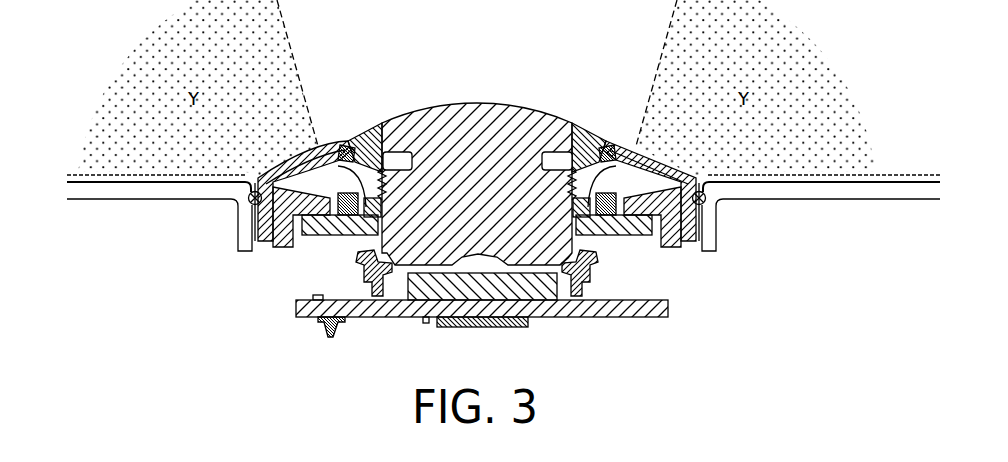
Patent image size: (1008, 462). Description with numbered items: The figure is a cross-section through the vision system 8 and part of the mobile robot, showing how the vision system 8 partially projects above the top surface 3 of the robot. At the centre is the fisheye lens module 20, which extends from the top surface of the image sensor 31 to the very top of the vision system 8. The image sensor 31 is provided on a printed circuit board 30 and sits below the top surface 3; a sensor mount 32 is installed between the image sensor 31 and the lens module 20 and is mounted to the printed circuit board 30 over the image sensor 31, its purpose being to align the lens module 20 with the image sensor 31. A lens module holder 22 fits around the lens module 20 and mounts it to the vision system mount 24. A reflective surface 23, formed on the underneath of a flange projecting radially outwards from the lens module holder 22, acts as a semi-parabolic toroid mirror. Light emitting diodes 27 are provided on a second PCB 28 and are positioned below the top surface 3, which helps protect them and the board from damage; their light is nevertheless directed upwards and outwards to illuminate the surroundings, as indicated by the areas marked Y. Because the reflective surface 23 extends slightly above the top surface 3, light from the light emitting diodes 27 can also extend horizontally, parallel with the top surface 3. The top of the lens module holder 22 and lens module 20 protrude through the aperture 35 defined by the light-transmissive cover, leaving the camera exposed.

The top surface 3 is at (124, 192).
The vision system 8 is at (384, 36).
The lens module 20 is at (472, 137).
The lens module holder 22 is at (370, 128).
The reflective surface 23 is at (633, 222).
The vision system mount 24 is at (280, 246).
The light emitting diodes 27 is at (350, 192).
The second PCB 28 is at (679, 212).
The printed circuit board 30 is at (668, 310).
The image sensor 31 is at (430, 292).
The sensor mount 32 is at (362, 258).
The aperture 35 is at (256, 206).